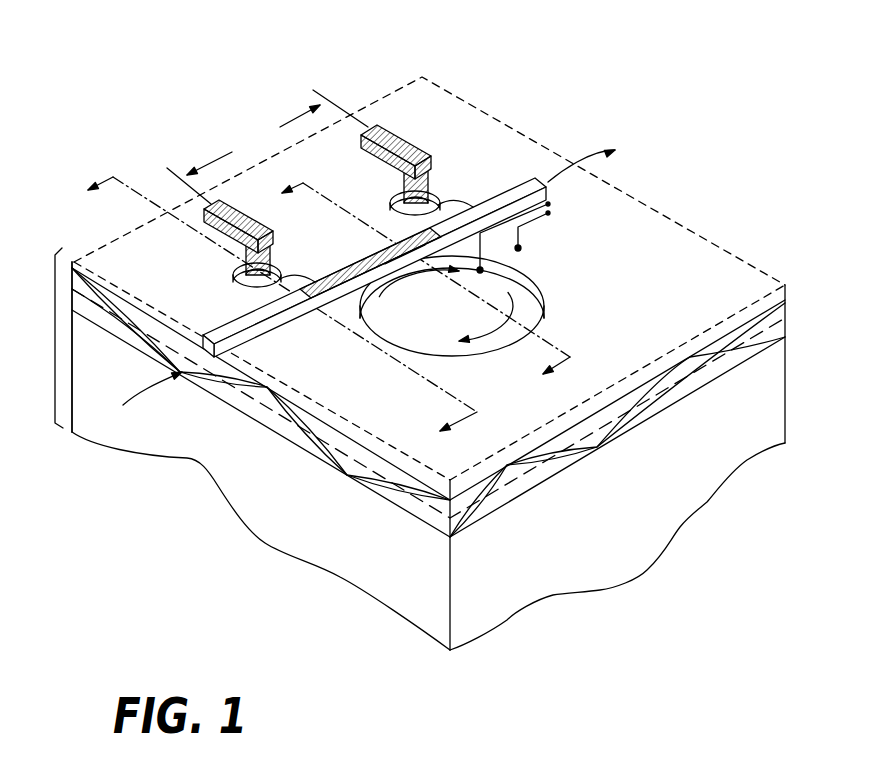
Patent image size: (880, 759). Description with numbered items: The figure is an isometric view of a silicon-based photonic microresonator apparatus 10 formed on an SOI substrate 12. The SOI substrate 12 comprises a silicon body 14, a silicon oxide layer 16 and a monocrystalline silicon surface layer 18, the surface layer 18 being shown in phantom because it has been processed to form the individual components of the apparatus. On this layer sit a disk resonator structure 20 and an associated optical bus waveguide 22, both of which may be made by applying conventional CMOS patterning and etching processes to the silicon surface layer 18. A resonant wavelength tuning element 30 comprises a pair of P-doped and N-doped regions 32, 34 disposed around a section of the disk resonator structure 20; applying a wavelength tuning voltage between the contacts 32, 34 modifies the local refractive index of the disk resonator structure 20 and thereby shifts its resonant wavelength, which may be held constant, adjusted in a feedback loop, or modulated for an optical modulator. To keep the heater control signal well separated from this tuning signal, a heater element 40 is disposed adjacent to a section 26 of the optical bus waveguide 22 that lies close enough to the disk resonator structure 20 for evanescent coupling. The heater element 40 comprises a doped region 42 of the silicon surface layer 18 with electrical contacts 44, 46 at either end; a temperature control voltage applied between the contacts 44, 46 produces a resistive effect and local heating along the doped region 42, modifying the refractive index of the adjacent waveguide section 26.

The photonic microresonator apparatus 10 is at (197, 100).
The SOI substrate 12 is at (53, 342).
The silicon body 14 is at (83, 433).
The silicon oxide layer 16 is at (425, 510).
The monocrystalline silicon surface layer 18 is at (483, 463).
The disk resonator structure 20 is at (547, 312).
The optical bus waveguide 22 is at (354, 270).
The section of optical bus waveguide 26 is at (312, 298).
The resonant wavelength tuning element 30 is at (612, 238).
The P-doped region 32 is at (480, 274).
The N-doped region 34 is at (528, 248).
The heater element 40 is at (420, 125).
The doped region 42 is at (403, 242).
The electrical contact 44 is at (255, 219).
The electrical contact 46 is at (412, 142).